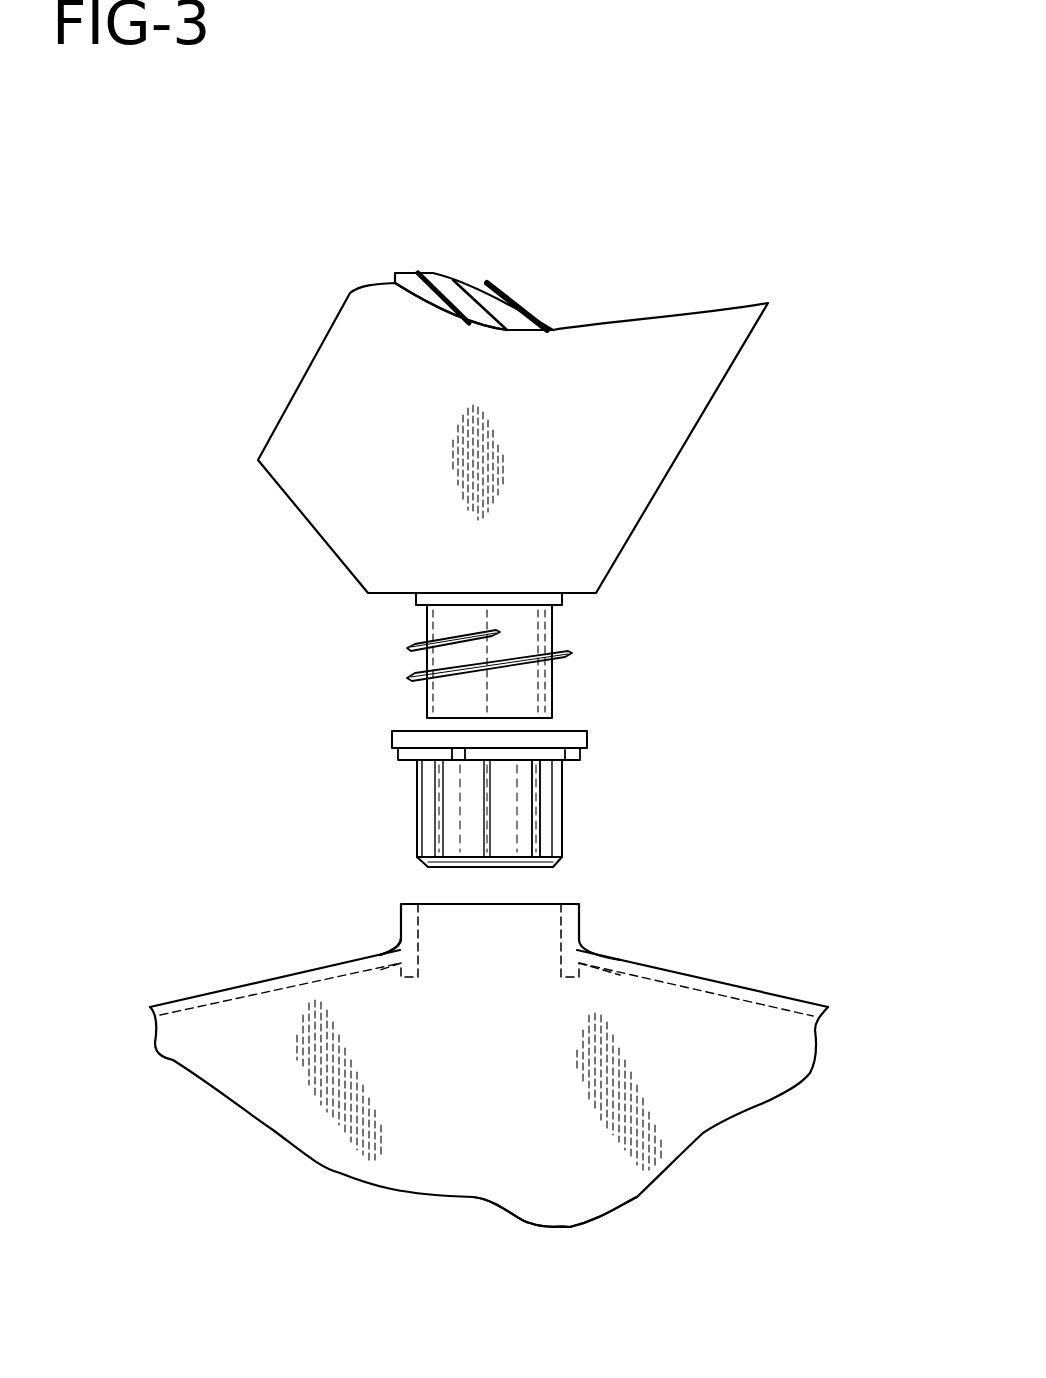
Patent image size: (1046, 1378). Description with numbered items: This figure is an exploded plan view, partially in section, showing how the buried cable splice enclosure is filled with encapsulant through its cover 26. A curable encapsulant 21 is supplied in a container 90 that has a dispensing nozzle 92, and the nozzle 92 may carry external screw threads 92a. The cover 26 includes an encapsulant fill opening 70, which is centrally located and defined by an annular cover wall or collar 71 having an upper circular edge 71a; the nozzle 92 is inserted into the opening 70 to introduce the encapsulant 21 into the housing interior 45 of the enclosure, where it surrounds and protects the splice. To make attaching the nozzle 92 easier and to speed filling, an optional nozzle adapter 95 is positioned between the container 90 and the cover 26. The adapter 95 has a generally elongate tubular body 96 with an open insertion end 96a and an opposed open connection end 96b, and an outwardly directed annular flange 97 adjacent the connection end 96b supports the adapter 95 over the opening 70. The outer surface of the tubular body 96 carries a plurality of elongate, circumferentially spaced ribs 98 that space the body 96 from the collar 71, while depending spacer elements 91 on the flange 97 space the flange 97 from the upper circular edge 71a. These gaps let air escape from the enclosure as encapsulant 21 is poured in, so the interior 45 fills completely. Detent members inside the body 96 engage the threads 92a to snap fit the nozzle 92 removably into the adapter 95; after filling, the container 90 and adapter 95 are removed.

The encapsulant 21 is at (483, 300).
The container 90 is at (625, 448).
The dispensing nozzle 92 is at (527, 682).
The external screw threads 92a is at (528, 650).
The annular flange 97 is at (393, 740).
The spacer elements 91 is at (402, 758).
The tubular body 96 is at (455, 823).
The insertion end 96a is at (433, 867).
The connection end 96b is at (513, 750).
The nozzle adapter 95 is at (593, 820).
The ribs 98 is at (538, 830).
The encapsulant fill opening 70 is at (517, 918).
The annular cover wall or collar 71 is at (568, 932).
The upper circular edge 71a is at (408, 922).
The cover 26 is at (787, 993).
The housing interior 45 is at (577, 1152).